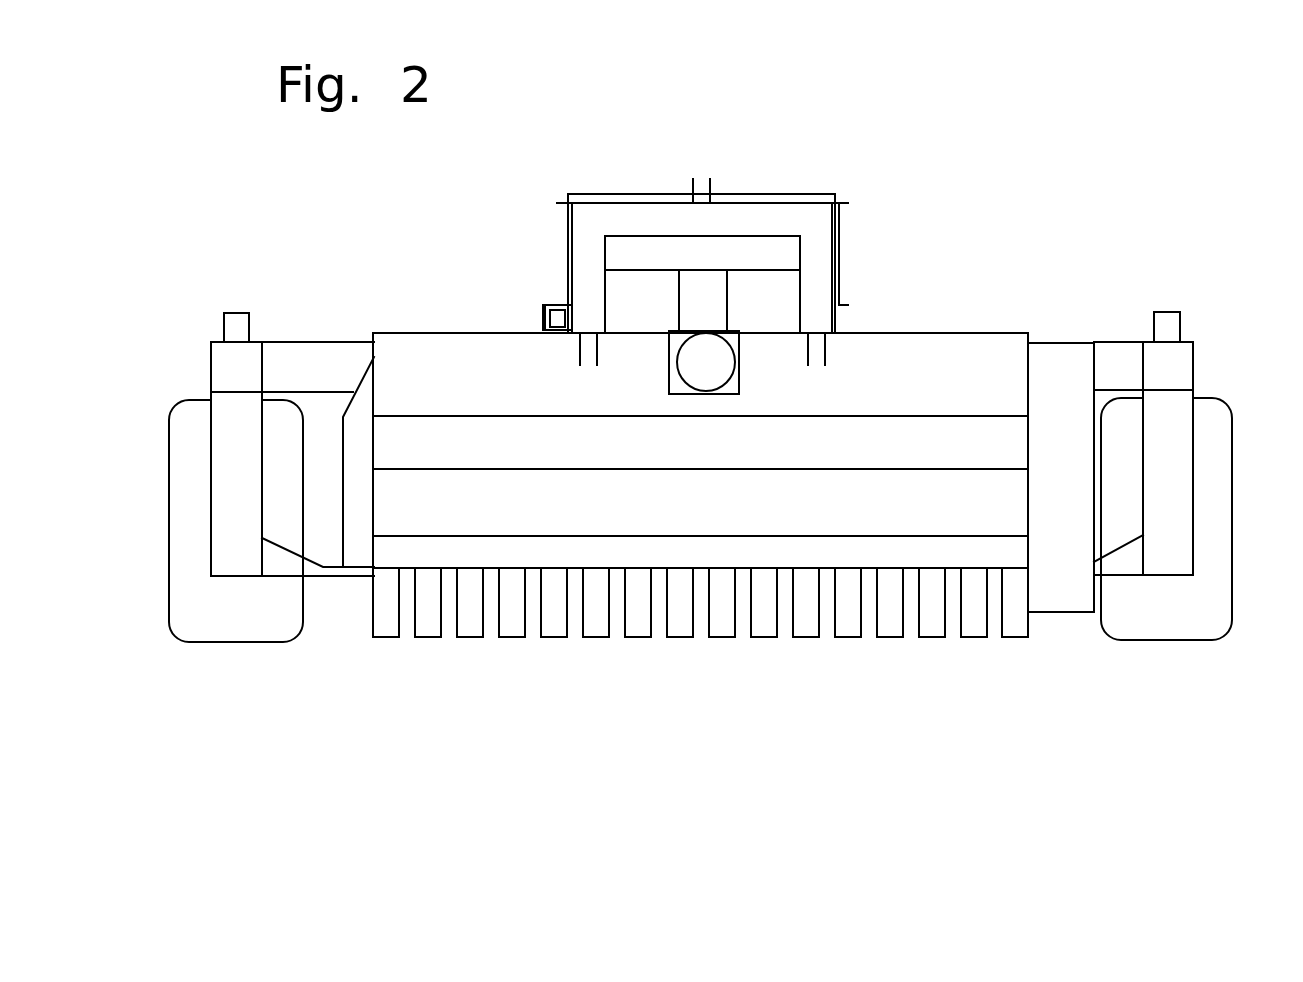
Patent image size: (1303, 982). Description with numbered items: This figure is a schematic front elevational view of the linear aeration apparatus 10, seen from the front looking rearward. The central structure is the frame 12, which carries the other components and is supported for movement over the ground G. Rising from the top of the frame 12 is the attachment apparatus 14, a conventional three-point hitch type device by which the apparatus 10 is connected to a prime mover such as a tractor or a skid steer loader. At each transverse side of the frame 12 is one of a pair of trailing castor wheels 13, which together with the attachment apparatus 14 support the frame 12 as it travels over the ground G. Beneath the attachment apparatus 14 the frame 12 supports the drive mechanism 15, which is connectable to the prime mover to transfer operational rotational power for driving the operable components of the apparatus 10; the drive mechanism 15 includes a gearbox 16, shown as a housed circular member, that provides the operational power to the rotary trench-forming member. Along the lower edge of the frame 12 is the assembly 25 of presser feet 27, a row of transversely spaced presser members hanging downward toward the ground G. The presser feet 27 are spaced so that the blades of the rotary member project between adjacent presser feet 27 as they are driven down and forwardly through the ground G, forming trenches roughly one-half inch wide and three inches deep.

The linear aeration apparatus 10 is at (936, 205).
The frame 12 is at (921, 331).
The castor wheels 13 is at (189, 400).
The attachment apparatus 14 is at (712, 191).
The drive mechanism 15 is at (673, 343).
The gearbox 16 is at (743, 363).
The assembly of presser feet 25 is at (1022, 679).
The presser feet 27 is at (381, 630).
The ground G is at (1248, 642).